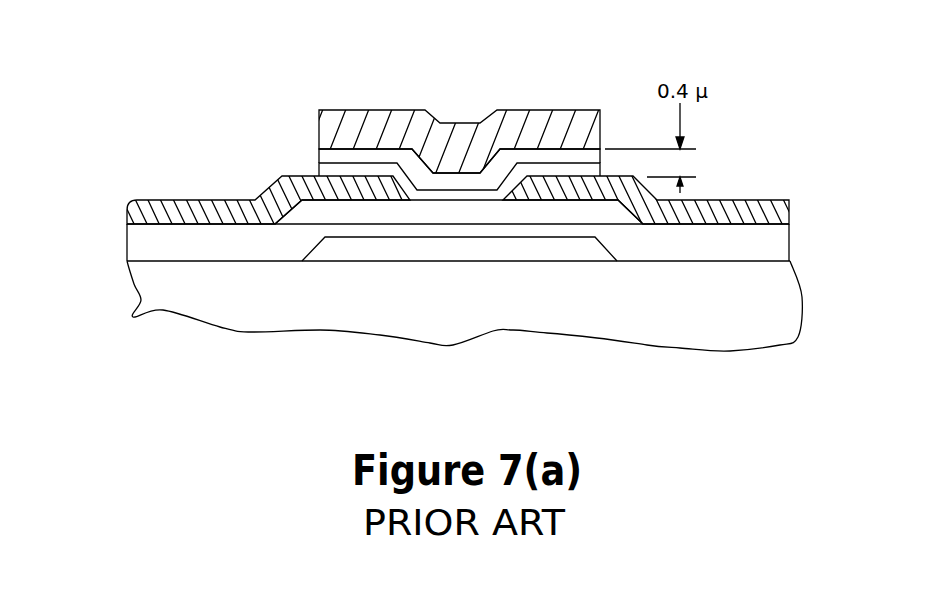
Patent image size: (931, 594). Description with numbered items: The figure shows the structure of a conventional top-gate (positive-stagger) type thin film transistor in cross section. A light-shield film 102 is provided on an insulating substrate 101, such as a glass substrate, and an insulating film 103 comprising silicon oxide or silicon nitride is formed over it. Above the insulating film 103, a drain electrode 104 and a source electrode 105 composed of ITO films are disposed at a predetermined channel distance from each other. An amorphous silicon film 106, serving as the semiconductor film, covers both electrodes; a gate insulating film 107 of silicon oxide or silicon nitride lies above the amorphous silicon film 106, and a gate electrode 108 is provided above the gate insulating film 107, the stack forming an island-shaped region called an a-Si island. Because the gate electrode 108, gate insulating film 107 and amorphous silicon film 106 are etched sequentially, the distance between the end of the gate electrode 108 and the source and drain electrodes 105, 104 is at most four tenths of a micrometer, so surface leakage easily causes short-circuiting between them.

The insulating substrate 101 is at (670, 348).
The light-shield film 102 is at (420, 262).
The insulating film 103 is at (178, 262).
The drain electrode 104 is at (741, 200).
The source electrode 105 is at (127, 199).
The amorphous silicon film 106 is at (318, 168).
The gate insulating film 107 is at (318, 152).
The gate electrode 108 is at (382, 110).